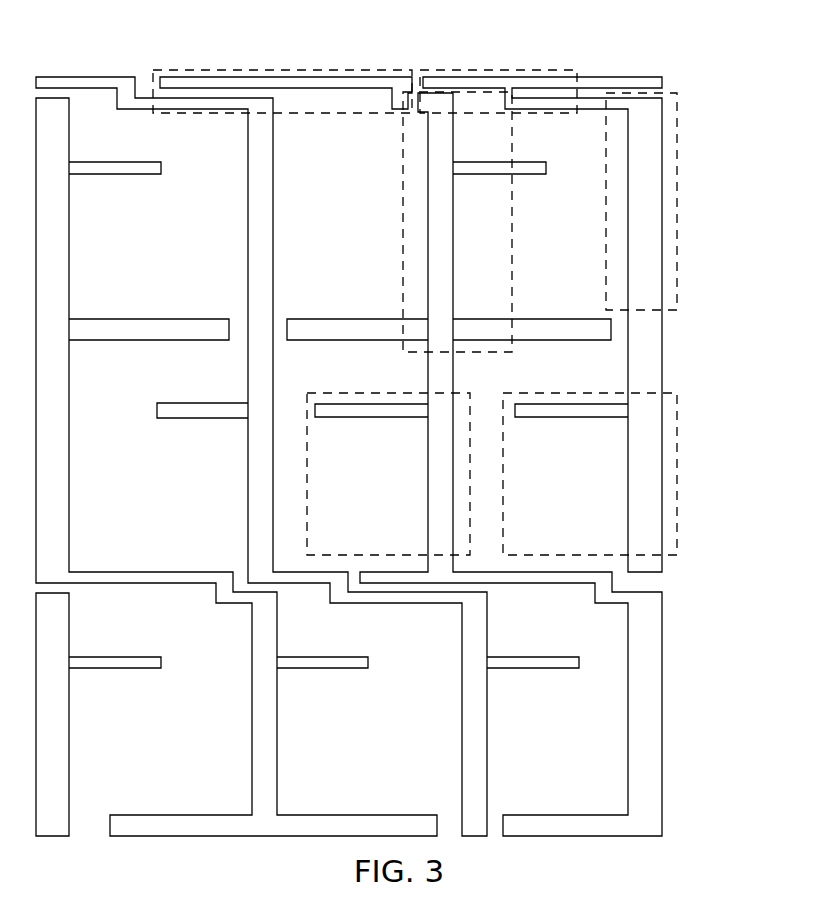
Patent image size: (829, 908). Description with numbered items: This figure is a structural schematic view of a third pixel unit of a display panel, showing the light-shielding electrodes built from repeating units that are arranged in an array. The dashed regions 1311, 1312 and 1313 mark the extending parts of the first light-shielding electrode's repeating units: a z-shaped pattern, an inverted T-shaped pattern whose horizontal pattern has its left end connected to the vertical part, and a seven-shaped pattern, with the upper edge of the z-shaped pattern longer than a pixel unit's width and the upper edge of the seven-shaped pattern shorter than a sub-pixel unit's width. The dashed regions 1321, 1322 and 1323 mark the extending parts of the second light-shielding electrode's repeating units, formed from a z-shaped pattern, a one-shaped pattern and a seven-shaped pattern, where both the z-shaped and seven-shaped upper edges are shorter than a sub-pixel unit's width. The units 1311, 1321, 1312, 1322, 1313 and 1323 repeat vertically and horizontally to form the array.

The first sub-electrode strip 1311 is at (264, 84).
The second sub-electrode strip 1321 is at (490, 84).
The first electrode connecting portion 1312 is at (493, 283).
The second electrode connecting portion 1322 is at (655, 181).
The first electrode branch region 1313 is at (342, 459).
The second electrode branch region 1323 is at (655, 478).